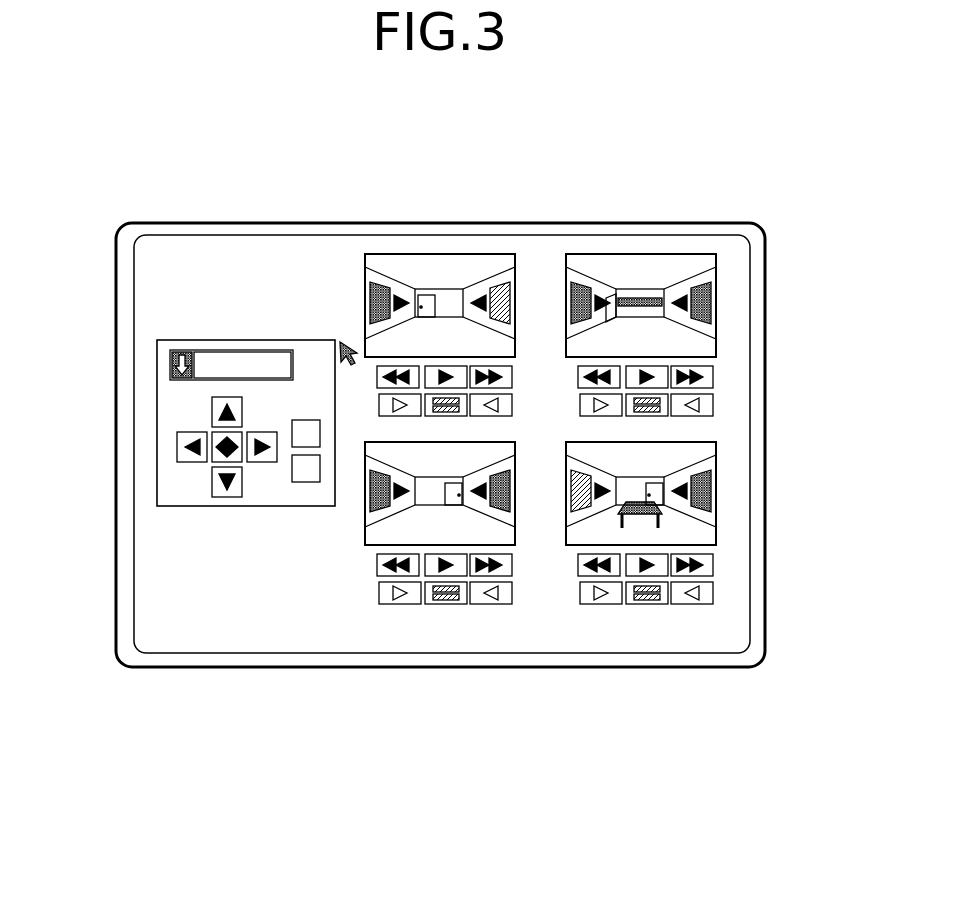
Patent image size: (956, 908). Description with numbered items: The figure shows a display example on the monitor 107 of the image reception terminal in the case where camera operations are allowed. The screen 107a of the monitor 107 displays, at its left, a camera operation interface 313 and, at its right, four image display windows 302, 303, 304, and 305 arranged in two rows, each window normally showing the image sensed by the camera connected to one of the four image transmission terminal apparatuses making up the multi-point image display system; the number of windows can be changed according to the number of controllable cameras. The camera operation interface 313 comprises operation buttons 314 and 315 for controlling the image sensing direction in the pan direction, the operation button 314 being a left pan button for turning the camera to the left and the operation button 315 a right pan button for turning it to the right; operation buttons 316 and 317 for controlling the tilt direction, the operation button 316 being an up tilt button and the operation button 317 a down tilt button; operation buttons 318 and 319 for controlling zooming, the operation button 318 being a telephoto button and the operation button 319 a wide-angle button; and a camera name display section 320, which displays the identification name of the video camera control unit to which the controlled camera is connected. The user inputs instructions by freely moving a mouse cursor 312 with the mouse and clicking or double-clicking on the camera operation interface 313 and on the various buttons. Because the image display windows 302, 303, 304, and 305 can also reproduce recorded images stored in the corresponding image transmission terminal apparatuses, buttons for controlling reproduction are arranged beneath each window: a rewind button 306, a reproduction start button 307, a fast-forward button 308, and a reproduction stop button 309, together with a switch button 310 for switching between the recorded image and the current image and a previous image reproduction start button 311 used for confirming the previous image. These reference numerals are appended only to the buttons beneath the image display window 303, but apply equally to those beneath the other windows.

The monitor 107 is at (485, 662).
The screen 107a is at (397, 643).
The image display window 302 is at (398, 254).
The image display window 303 is at (676, 254).
The image display window 304 is at (365, 502).
The image display window 305 is at (716, 500).
The rewind button 306 is at (578, 375).
The reproduction start button 307 is at (670, 388).
The fast-forward button 308 is at (716, 374).
The reproduction stop button 309 is at (660, 417).
The switch button 310 is at (582, 398).
The previous image reproduction start button 311 is at (717, 410).
The mouse cursor 312 is at (346, 338).
The camera operation interface 313 is at (252, 500).
The operation button 314 is at (177, 447).
The operation button 315 is at (268, 463).
The operation button 316 is at (210, 412).
The operation button 317 is at (212, 484).
The operation button 318 is at (305, 420).
The operation button 319 is at (305, 483).
The camera name display section 320 is at (218, 350).